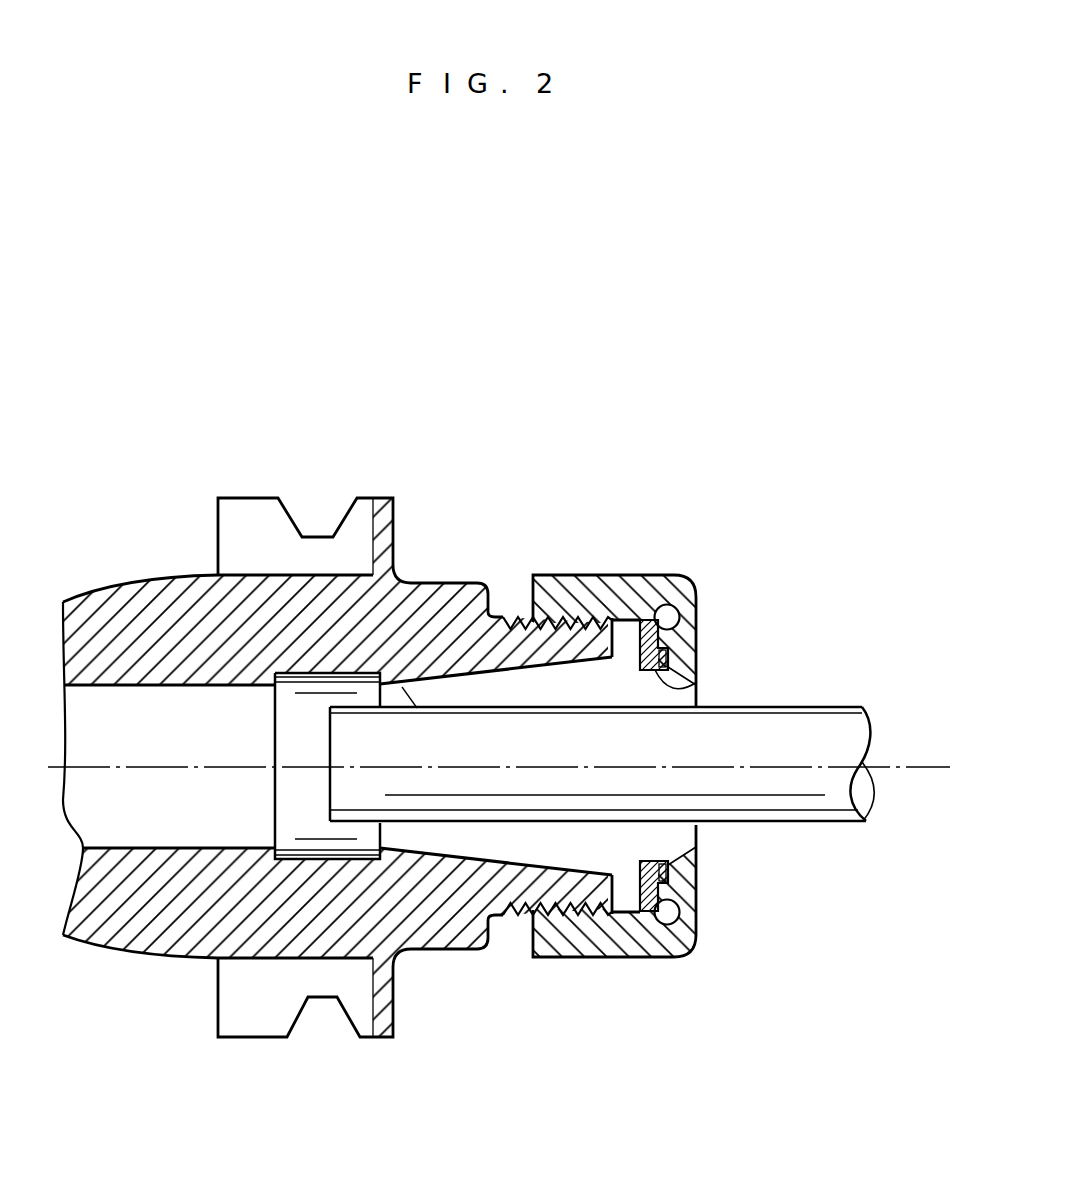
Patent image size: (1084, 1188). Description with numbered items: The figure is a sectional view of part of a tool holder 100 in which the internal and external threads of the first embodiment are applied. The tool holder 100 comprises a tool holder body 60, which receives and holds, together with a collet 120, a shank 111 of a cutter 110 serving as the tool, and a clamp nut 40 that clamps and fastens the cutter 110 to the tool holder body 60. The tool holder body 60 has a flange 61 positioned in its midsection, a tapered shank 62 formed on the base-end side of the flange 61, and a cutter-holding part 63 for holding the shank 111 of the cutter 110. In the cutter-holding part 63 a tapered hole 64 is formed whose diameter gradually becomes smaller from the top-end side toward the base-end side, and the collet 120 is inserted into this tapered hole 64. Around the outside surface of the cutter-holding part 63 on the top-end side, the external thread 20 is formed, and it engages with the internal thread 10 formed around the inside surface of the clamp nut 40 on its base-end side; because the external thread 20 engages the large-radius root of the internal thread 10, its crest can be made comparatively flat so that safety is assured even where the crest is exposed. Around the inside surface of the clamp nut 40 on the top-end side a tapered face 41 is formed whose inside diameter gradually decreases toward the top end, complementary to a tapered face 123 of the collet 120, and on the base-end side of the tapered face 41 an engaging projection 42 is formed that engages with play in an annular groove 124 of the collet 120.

The tool holder 100 is at (712, 348).
The internal thread 10 is at (567, 917).
The external thread 20 is at (515, 908).
The clamp nut 40 is at (698, 562).
The tapered face 41 is at (697, 652).
The engaging projection 42 is at (647, 613).
The tool holder body 60 is at (232, 478).
The flange 61 is at (381, 520).
The tapered shank 62 is at (156, 606).
The cutter-holding part 63 is at (520, 625).
The tapered hole 64 is at (535, 682).
The cutter 110 is at (823, 725).
The shank 111 is at (735, 808).
The collet 120 is at (585, 682).
The tapered face 123 is at (650, 630).
The annular groove 124 is at (697, 682).